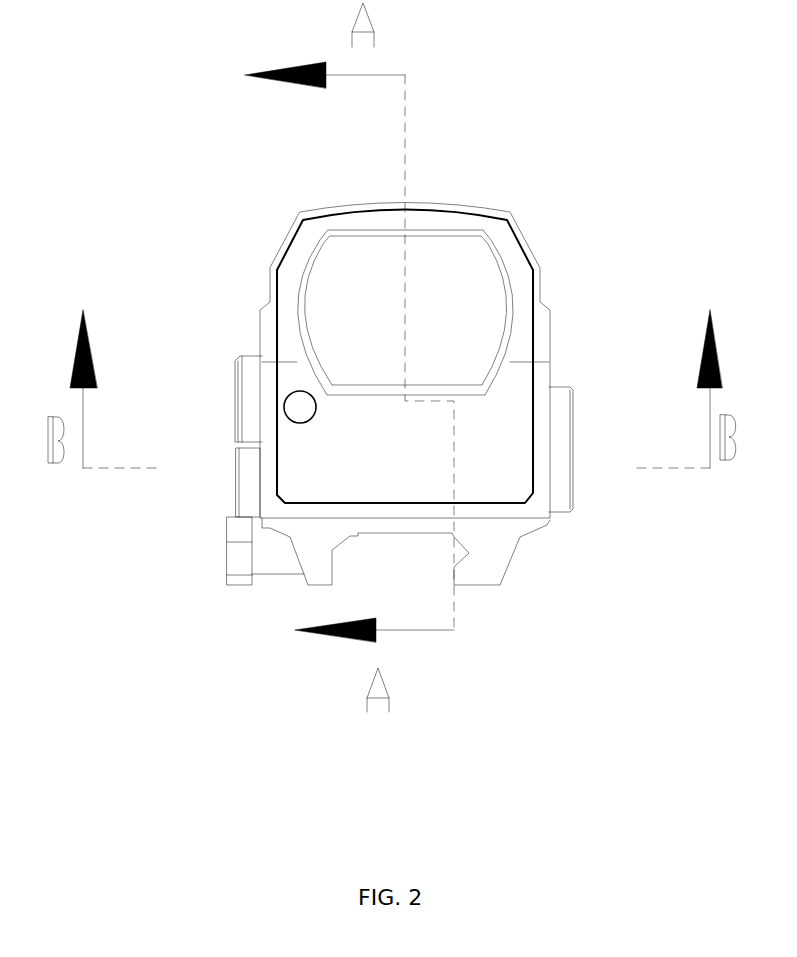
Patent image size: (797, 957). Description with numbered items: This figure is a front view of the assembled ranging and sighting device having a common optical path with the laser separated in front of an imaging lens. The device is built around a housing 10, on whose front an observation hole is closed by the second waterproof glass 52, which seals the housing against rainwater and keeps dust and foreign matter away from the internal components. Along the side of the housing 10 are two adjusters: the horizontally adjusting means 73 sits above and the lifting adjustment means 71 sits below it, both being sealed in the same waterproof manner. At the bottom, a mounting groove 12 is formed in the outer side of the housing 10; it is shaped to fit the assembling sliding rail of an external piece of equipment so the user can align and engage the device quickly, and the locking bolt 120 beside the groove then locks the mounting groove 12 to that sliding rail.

The housing 10 is at (277, 268).
The second waterproof glass 52 is at (462, 302).
The horizontally adjusting means 73 is at (236, 398).
The lifting adjustment means 71 is at (236, 486).
The locking bolt 120 is at (228, 556).
The mounting groove 12 is at (365, 563).